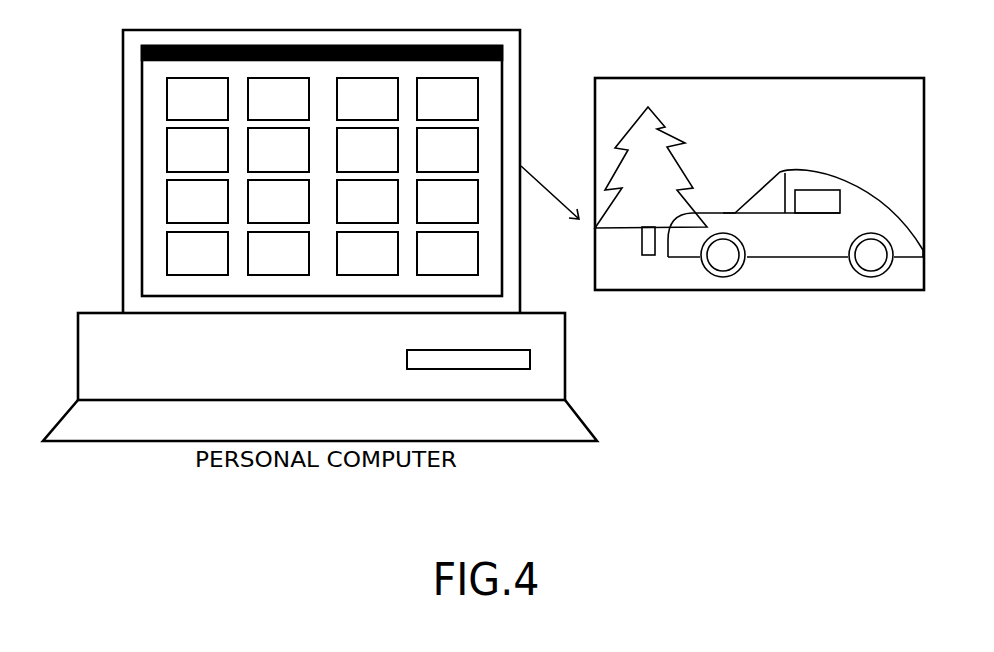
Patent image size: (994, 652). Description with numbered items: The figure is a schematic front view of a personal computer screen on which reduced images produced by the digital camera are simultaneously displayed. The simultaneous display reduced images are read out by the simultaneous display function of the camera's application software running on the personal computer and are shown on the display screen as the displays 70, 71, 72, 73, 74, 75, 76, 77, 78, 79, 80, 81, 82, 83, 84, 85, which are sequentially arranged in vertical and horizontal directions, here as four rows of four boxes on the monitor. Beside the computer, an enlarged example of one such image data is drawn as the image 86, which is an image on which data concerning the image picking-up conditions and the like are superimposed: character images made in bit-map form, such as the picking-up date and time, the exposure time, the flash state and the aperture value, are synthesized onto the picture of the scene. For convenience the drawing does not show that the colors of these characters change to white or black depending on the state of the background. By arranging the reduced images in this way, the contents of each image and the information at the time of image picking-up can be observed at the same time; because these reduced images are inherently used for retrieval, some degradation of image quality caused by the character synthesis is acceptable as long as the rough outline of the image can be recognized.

The display 70 is at (197, 99).
The display 71 is at (278, 99).
The display 72 is at (367, 99).
The display 73 is at (447, 99).
The display 74 is at (197, 150).
The display 75 is at (278, 150).
The display 76 is at (367, 150).
The display 77 is at (447, 150).
The display 78 is at (197, 201).
The display 79 is at (278, 201).
The display 80 is at (367, 201).
The display 81 is at (447, 201).
The display 82 is at (197, 253).
The display 83 is at (278, 253).
The display 84 is at (367, 253).
The display 85 is at (447, 253).
The image 86 is at (760, 78).